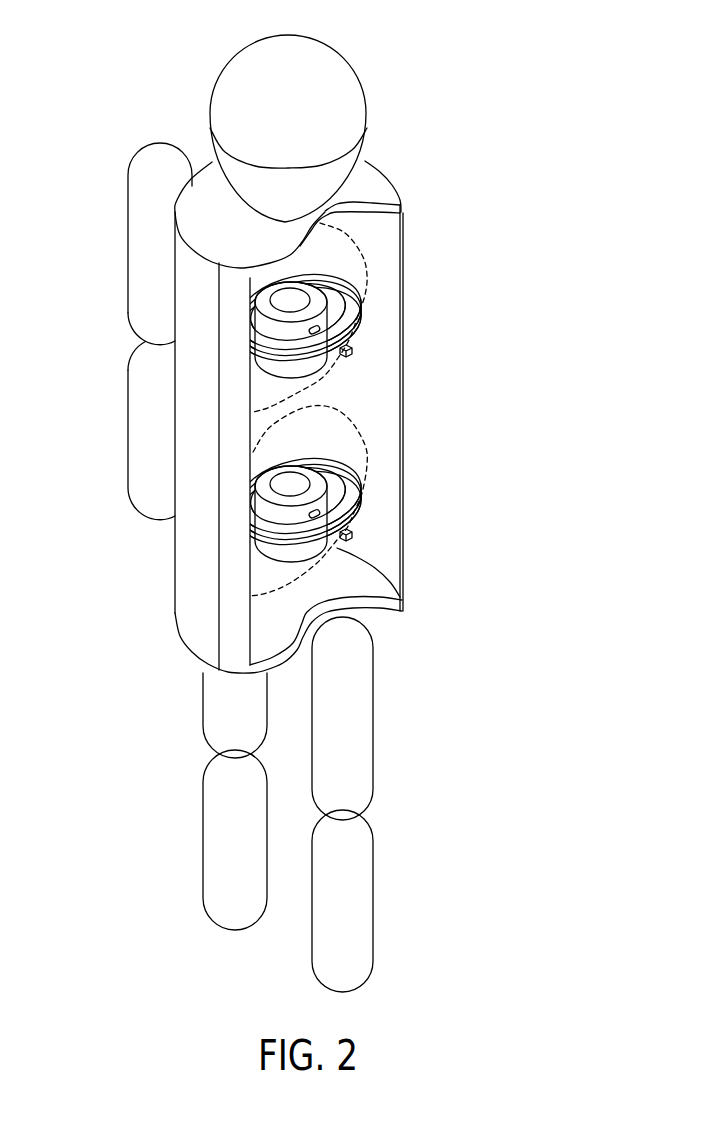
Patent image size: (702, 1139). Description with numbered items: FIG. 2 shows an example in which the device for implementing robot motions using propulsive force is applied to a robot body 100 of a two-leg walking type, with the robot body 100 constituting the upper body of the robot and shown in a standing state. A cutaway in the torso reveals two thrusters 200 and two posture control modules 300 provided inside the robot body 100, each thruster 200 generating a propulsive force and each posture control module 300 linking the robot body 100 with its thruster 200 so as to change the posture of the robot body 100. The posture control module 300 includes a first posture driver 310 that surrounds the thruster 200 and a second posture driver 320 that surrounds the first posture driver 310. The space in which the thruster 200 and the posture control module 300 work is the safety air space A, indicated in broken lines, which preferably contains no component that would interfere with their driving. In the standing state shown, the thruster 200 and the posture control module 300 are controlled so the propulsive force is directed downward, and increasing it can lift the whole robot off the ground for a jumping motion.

The robot body 100 is at (190, 435).
The thruster 200 is at (260, 505).
The posture control module 300 is at (406, 321).
The first posture driver 310 is at (350, 296).
The second posture driver 320 is at (353, 330).
The safety air space A is at (352, 446).